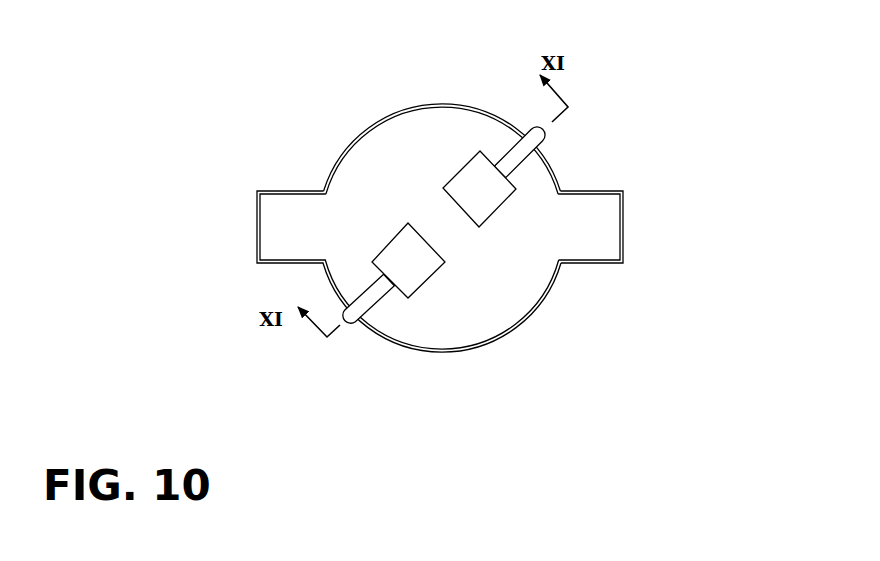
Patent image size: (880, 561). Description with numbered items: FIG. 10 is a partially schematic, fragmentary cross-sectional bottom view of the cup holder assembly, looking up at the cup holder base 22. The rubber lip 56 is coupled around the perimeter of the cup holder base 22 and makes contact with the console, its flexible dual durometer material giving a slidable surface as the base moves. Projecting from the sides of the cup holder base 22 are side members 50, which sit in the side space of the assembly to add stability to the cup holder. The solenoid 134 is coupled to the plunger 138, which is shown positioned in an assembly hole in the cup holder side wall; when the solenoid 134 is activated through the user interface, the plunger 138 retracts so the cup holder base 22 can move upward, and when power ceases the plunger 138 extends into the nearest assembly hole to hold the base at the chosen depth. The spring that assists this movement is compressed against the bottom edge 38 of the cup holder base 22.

The cup holder base 22 is at (367, 174).
The bottom edge 38 is at (498, 300).
The side member 50 is at (582, 245).
The rubber lip 56 is at (357, 140).
The solenoid 134 is at (490, 192).
The plunger 138 is at (535, 140).